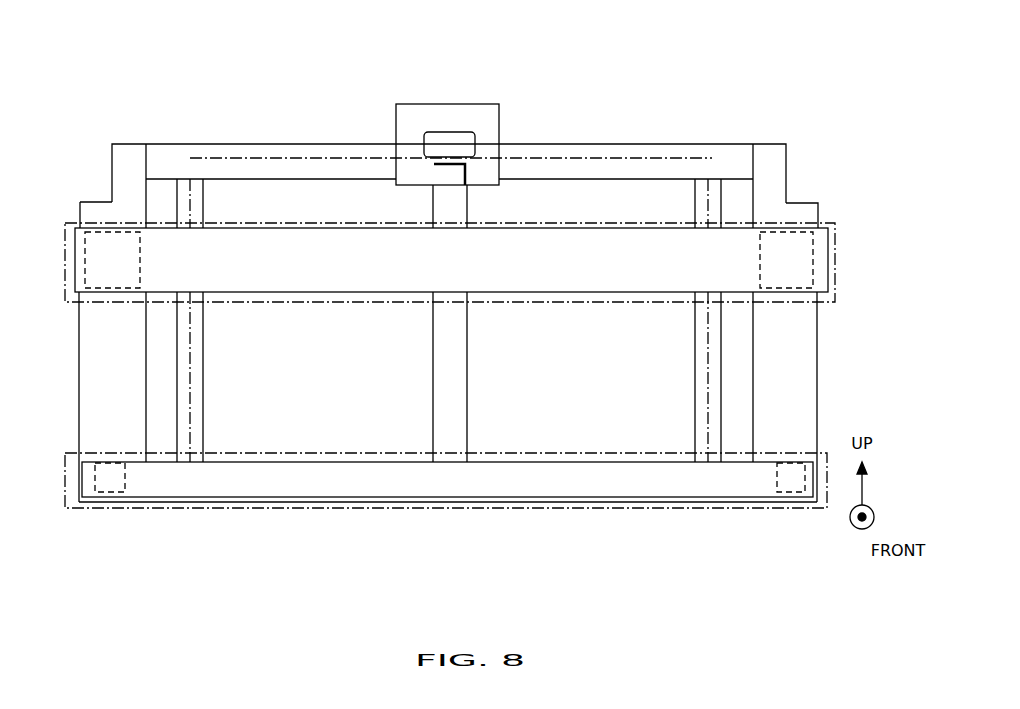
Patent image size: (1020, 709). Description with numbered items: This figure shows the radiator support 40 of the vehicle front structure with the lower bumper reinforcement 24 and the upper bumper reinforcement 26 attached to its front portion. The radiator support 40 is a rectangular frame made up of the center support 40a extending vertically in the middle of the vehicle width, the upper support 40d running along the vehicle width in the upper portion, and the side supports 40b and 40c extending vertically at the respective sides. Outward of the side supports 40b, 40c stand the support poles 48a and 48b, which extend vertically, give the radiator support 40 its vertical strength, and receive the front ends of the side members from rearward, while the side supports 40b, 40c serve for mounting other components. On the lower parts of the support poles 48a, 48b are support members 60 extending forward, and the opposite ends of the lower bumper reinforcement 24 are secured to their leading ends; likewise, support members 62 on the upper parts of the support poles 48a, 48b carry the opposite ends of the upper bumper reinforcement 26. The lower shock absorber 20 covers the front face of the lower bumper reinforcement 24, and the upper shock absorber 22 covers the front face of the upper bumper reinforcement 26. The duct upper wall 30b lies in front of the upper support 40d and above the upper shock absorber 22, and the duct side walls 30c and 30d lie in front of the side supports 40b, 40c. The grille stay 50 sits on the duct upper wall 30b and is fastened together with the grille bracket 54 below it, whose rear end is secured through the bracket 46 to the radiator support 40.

The lower shock absorber 20 is at (520, 510).
The upper shock absorber 22 is at (373, 308).
The lower bumper reinforcement 24 is at (340, 482).
The upper bumper reinforcement 26 is at (485, 275).
The duct upper wall 30b is at (578, 140).
The duct side wall 30c is at (198, 352).
The duct side wall 30d is at (703, 350).
The radiator support 40 is at (686, 120).
The center support 40a is at (433, 430).
The side support 40b is at (700, 368).
The side support 40c is at (196, 392).
The upper support 40d is at (242, 145).
The bracket 46 is at (485, 130).
The support pole 48a is at (792, 385).
The support pole 48b is at (110, 370).
The grille stay 50 is at (445, 132).
The grille bracket 54 is at (465, 168).
The support member 60 is at (115, 495).
The support member 62 is at (106, 232).